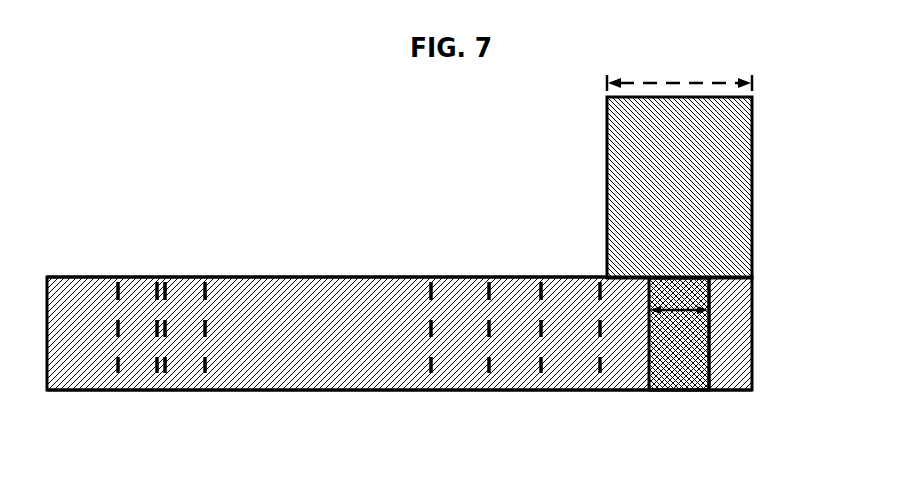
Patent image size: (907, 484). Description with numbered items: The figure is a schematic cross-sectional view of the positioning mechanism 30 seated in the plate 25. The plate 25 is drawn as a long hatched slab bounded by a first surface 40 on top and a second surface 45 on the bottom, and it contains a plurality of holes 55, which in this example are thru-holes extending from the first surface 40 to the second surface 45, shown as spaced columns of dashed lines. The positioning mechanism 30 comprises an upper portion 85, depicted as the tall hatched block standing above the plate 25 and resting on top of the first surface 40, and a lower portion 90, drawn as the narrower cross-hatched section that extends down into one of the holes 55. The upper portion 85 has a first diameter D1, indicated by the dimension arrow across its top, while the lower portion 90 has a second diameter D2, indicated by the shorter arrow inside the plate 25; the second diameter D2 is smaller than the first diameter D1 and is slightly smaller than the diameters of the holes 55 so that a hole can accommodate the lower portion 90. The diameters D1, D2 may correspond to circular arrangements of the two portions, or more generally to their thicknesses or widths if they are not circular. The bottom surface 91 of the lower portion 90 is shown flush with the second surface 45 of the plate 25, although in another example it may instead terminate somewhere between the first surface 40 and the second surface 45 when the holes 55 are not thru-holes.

The plate 25 is at (764, 327).
The positioning mechanism 30 is at (764, 170).
The first surface 40 is at (318, 277).
The second surface 45 is at (323, 390).
The holes 55 is at (143, 390).
The upper portion 85 is at (740, 226).
The lower portion 90 is at (697, 390).
The bottom surface 91 is at (687, 390).
The first diameter D1 is at (679, 72).
The second diameter D2 is at (678, 310).